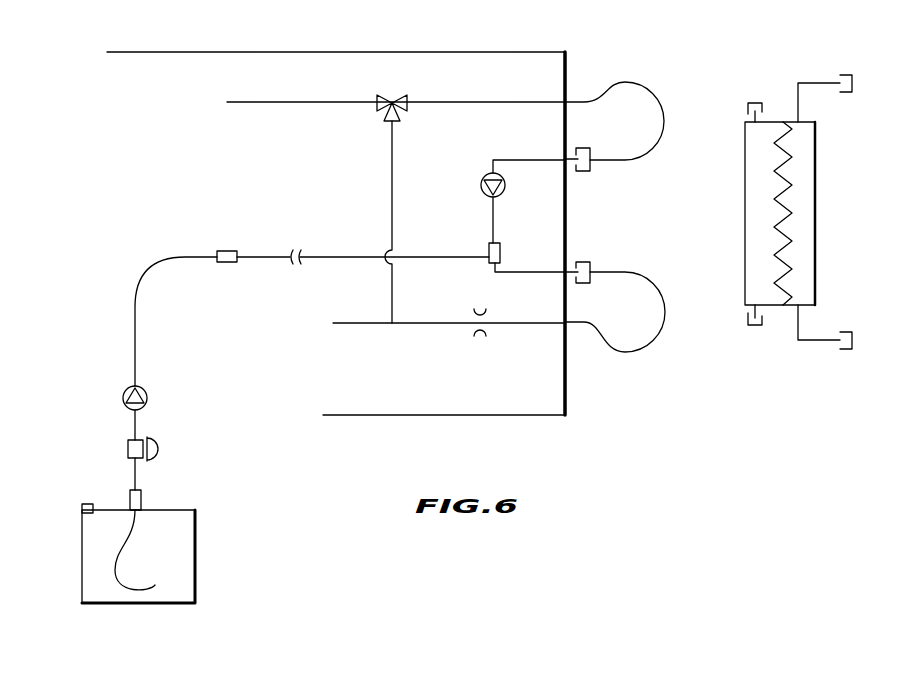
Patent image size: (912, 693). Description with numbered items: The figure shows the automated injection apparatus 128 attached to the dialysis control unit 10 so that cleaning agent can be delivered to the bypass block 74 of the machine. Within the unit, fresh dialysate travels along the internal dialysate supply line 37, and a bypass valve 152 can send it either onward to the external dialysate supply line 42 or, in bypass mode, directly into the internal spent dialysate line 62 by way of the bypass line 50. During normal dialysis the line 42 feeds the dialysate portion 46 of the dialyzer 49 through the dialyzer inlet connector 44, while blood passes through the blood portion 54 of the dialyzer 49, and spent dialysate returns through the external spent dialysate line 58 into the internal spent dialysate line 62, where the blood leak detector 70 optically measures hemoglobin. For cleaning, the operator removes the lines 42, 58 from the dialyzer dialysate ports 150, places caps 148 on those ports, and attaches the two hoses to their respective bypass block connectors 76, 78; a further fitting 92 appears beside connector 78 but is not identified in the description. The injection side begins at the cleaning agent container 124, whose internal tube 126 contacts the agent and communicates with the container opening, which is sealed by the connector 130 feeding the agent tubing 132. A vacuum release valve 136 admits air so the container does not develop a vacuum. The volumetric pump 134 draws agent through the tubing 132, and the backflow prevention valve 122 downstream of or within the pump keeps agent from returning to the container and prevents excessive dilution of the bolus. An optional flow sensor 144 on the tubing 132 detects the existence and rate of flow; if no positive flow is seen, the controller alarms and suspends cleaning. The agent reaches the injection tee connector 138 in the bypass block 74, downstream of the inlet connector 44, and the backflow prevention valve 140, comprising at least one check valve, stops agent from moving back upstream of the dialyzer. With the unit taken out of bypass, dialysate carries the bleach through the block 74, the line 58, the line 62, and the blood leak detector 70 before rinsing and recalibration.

The dialysis control unit 10 is at (260, 172).
The internal dialysate supply line 37 is at (300, 101).
The external dialysate supply line 42 is at (640, 84).
The dialyzer inlet connector 44 is at (590, 172).
The dialysate portion of the dialyzer 46 is at (752, 190).
The dialyzer 49 is at (820, 247).
The bypass line 50 is at (392, 184).
The blood portion of the dialyzer 54 is at (805, 178).
The external spent dialysate line 58 is at (655, 350).
The internal spent dialysate line 62 is at (410, 326).
The blood leak detector 70 is at (481, 338).
The bypass block 74 is at (492, 222).
The bypass block connector 76 is at (574, 150).
The bypass block connector 78 is at (575, 262).
The second reservoir outlet fitting 92 is at (590, 283).
The backflow prevention valve 122 is at (147, 397).
The cleaning agent container 124 is at (197, 562).
The internal tube 126 is at (122, 596).
The automated injection apparatus 128 is at (122, 326).
The connector 130 is at (142, 500).
The agent tubing 132 is at (137, 353).
The volumetric pump 134 is at (158, 450).
The vacuum release valve 136 is at (82, 508).
The injection tee connector 138 is at (485, 262).
The backflow prevention valve 140 is at (482, 178).
The flow sensor 144 is at (227, 250).
The caps 148 is at (752, 101).
The dialyzer dialysate ports 150 is at (748, 118).
The bypass valve 152 is at (397, 97).